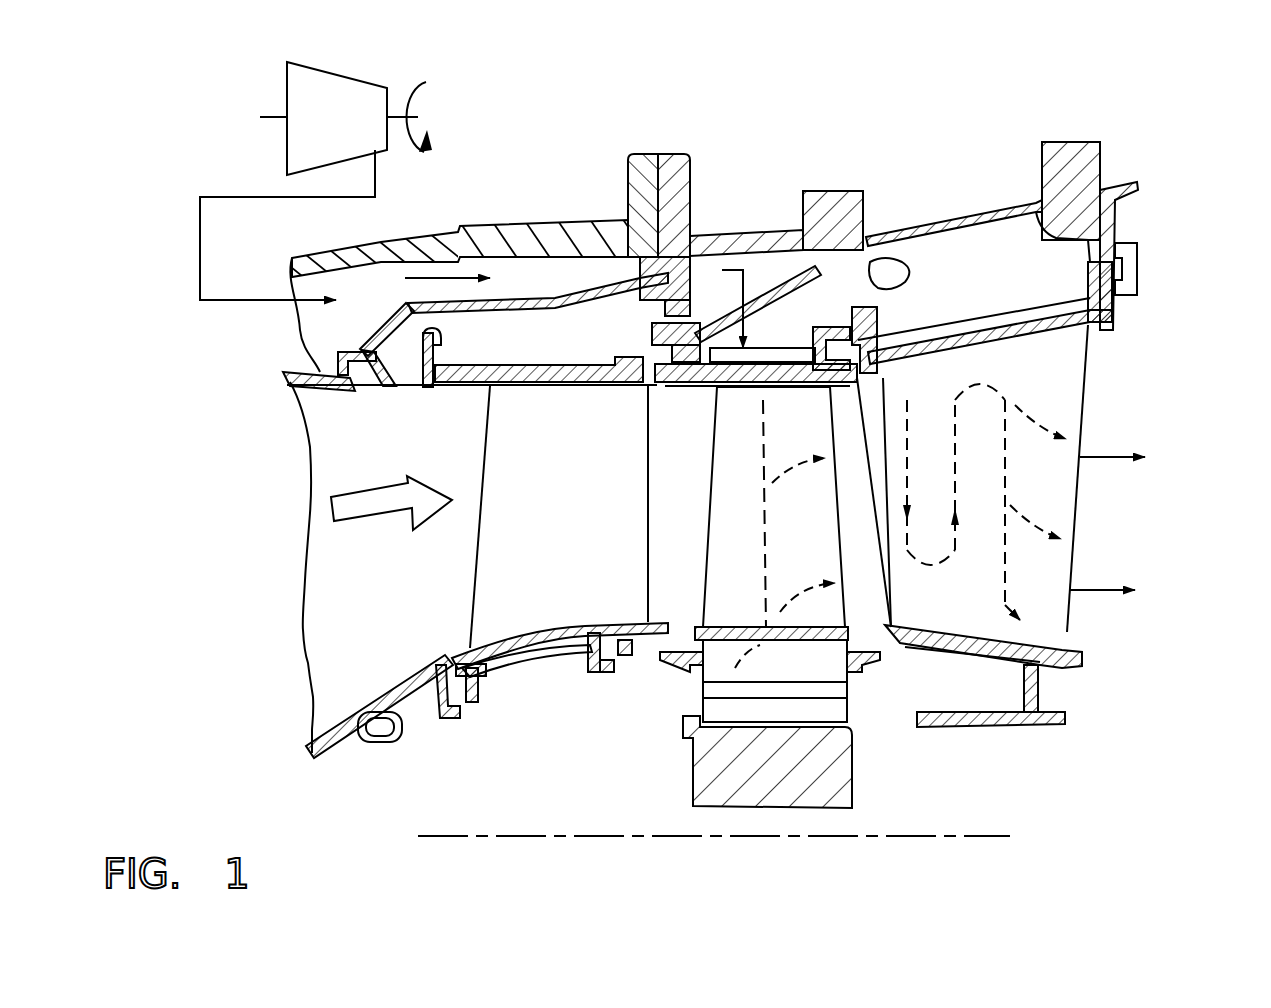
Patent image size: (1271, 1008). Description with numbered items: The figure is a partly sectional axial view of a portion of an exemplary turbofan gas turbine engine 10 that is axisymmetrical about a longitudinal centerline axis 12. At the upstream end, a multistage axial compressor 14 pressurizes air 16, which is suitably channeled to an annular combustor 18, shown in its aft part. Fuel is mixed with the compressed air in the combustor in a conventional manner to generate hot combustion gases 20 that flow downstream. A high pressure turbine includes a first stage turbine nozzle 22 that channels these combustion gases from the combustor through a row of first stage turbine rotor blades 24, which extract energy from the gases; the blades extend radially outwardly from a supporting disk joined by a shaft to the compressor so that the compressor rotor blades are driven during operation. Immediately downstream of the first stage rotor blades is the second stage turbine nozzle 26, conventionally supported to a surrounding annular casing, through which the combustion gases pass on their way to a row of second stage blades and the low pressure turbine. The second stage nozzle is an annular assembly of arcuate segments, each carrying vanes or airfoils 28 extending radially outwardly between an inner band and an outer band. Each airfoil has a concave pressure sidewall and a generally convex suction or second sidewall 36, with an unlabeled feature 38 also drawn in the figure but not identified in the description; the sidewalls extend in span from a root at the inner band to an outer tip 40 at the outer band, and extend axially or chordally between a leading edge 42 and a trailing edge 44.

The turbofan gas turbine engine 10 is at (557, 154).
The centerline axis 12 is at (963, 836).
The multistage axial compressor 14 is at (321, 126).
The air 16 is at (200, 257).
The annular combustor 18 is at (343, 662).
The combustion gases 20 is at (345, 495).
The first stage turbine nozzle 22 is at (539, 589).
The first stage turbine rotor blades 24 is at (783, 517).
The second stage turbine nozzle 26 is at (997, 306).
The vanes or airfoils 28 is at (1078, 555).
The second sidewall 36 is at (916, 466).
The blade platform 38 is at (1047, 652).
The outer tip 40 is at (1082, 333).
The leading edge 42 is at (886, 520).
The trailing edge 44 is at (1078, 502).